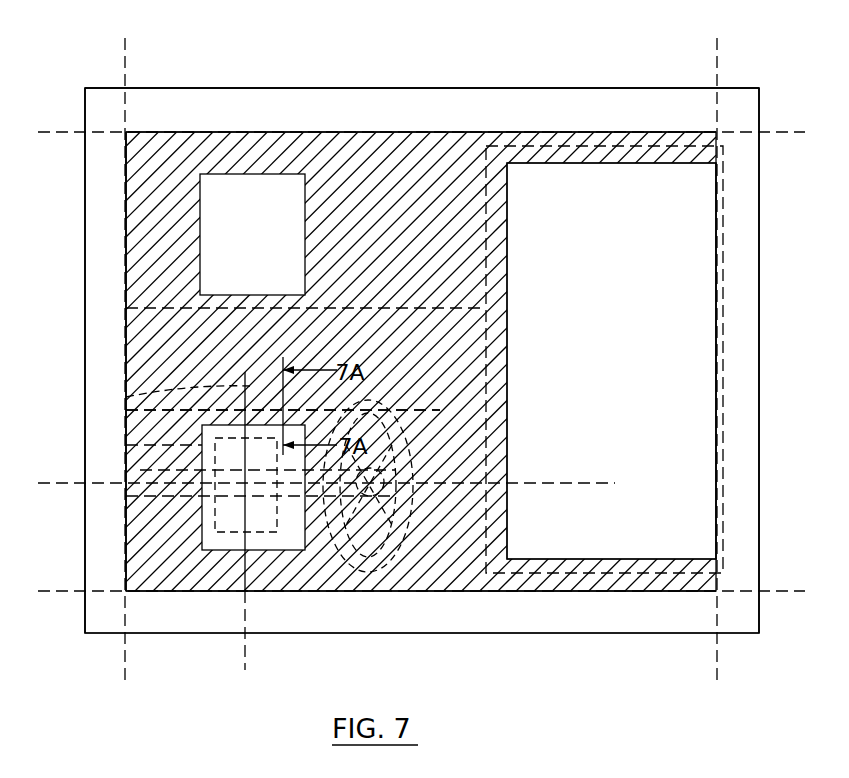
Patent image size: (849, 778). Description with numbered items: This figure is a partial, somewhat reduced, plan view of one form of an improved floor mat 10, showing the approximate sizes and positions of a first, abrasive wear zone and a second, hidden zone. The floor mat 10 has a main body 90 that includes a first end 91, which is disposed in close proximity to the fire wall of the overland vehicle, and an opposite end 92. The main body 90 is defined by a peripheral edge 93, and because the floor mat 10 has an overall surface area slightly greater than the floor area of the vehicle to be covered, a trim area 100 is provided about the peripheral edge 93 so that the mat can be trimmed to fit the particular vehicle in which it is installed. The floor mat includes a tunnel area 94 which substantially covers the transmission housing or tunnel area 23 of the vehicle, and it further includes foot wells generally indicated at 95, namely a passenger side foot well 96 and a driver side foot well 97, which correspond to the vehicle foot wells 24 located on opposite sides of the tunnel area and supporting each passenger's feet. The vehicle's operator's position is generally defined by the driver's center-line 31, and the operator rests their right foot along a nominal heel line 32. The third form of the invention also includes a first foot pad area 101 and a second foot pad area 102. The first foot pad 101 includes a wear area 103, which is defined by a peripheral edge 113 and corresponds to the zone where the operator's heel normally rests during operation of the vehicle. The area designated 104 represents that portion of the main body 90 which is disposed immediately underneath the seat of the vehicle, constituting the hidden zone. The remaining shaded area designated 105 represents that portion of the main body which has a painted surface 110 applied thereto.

The floor mat 10 is at (292, 80).
The tunnel area 23 is at (424, 326).
The foot wells 24 is at (428, 160).
The driver's center-line 31 is at (563, 482).
The nominal heel line 32 is at (126, 397).
The main body 90 is at (380, 103).
The first end 91 is at (97, 172).
The opposite end 92 is at (743, 180).
The peripheral edge 93 is at (187, 88).
The tunnel area 94 is at (153, 382).
The foot wells 95 is at (188, 161).
The passenger side foot well 96 is at (317, 140).
The driver side foot well 97 is at (318, 577).
The trim area 100 is at (608, 105).
The first foot pad area 101 is at (194, 521).
The second foot pad area 102 is at (232, 193).
The wear area 103 is at (262, 520).
The area underneath the seat 104 is at (693, 315).
The shaded area with painted surface 105 is at (463, 155).
The painted surface 110 is at (148, 228).
The peripheral edge of wear area 113 is at (126, 445).